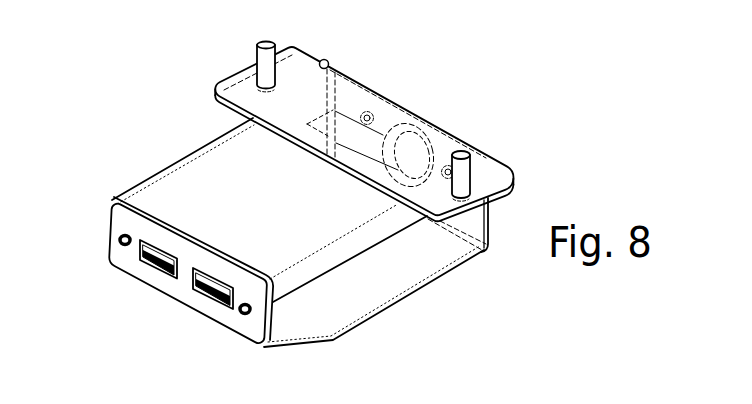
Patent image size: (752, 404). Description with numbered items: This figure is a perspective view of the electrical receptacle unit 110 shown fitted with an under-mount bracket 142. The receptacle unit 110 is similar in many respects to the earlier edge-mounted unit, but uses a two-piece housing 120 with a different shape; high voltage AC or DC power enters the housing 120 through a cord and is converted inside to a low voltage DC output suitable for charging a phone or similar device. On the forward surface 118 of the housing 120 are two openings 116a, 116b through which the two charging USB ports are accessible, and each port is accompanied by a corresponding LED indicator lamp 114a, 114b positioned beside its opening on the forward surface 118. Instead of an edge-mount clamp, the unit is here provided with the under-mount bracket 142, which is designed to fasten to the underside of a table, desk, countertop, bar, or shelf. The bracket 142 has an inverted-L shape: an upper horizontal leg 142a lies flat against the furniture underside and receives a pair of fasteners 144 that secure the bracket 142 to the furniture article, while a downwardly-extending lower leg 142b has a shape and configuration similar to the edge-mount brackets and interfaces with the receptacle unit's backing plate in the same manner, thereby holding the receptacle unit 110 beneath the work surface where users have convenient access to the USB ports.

The electrical receptacle unit 110 is at (254, 240).
The LED indicator lamp 114a is at (120, 240).
The LED indicator lamp 114b is at (244, 314).
The opening 116a is at (147, 262).
The opening 116b is at (216, 299).
The forward surface 118 is at (172, 285).
The housing 120 is at (370, 282).
The under-mount bracket 142 is at (376, 157).
The upper horizontal leg 142a is at (302, 78).
The lower leg 142b is at (490, 228).
The fastener 144 is at (257, 44).